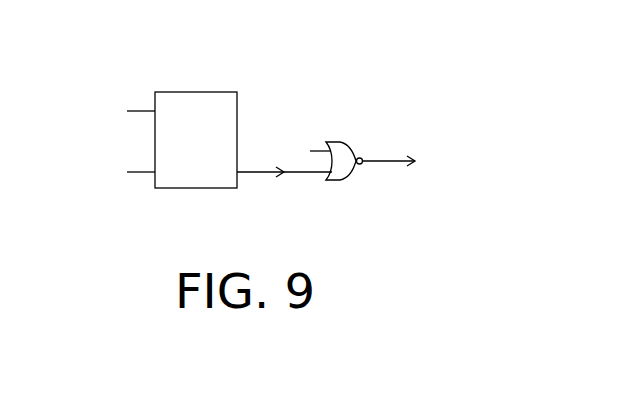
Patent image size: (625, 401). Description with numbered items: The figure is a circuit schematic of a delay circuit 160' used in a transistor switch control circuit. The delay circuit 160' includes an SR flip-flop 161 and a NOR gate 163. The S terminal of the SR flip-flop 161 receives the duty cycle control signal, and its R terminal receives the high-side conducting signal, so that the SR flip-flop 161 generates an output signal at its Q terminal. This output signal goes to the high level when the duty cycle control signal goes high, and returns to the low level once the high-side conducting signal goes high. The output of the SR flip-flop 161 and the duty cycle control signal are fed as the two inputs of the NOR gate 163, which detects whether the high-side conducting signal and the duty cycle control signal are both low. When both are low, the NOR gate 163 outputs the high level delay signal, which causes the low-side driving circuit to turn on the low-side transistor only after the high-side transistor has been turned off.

The delay circuit 160' is at (259, 106).
The SR flip-flop 161 is at (186, 92).
The NOR gate 163 is at (345, 144).